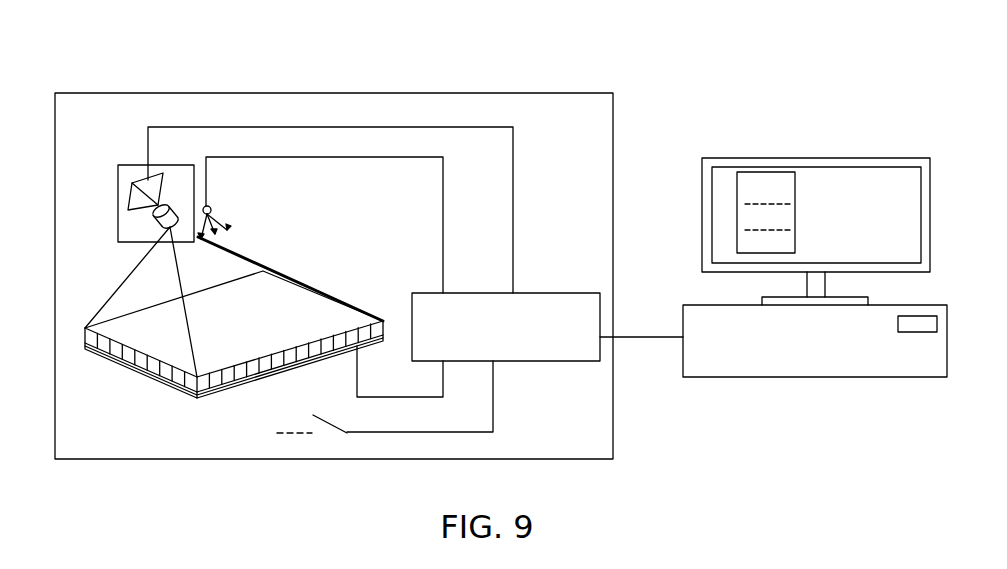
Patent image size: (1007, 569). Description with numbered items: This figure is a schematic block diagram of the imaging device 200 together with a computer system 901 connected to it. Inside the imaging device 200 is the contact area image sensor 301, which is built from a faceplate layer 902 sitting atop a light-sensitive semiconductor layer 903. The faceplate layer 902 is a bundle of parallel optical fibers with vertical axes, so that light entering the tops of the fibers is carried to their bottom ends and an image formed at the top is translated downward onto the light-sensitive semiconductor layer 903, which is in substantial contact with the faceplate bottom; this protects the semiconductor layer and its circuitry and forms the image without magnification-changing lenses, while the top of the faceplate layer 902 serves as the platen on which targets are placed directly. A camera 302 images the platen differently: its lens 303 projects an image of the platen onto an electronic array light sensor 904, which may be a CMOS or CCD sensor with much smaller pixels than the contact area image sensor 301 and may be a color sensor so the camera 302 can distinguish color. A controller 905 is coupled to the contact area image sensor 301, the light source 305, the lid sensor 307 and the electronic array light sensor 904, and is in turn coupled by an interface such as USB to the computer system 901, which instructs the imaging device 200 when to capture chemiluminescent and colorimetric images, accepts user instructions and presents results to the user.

The imaging device 200 is at (90, 95).
The camera 302 is at (128, 172).
The electronic array light sensor 904 is at (150, 193).
The lens 303 is at (158, 215).
The light source 305 is at (211, 210).
The contact area image sensor 301 is at (345, 310).
The faceplate layer 902 is at (132, 360).
The light-sensitive semiconductor layer 903 is at (180, 391).
The lid sensor 307 is at (328, 427).
The controller 905 is at (557, 302).
The computer system 901 is at (773, 158).